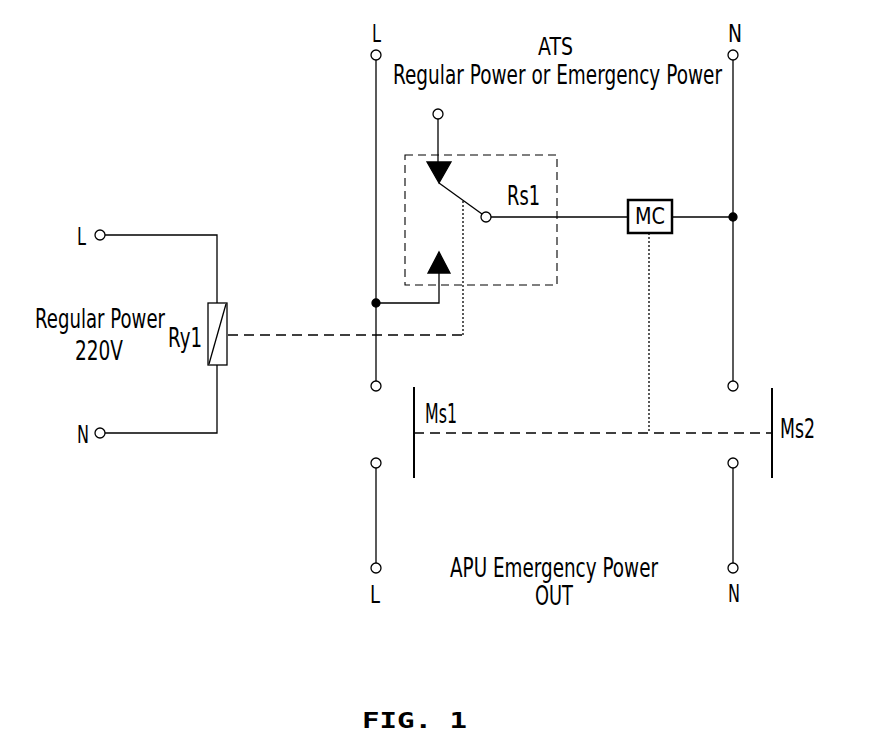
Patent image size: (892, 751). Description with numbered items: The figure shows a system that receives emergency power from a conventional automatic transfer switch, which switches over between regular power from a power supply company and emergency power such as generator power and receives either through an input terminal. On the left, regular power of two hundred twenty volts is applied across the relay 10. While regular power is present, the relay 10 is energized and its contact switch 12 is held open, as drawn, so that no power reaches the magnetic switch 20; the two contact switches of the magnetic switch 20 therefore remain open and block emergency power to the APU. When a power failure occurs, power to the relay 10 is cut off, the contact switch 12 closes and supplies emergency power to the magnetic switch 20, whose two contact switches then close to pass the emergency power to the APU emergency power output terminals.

The relay 10 is at (227, 309).
The contact switch 12 is at (558, 186).
The magnetic switch 20 is at (650, 200).